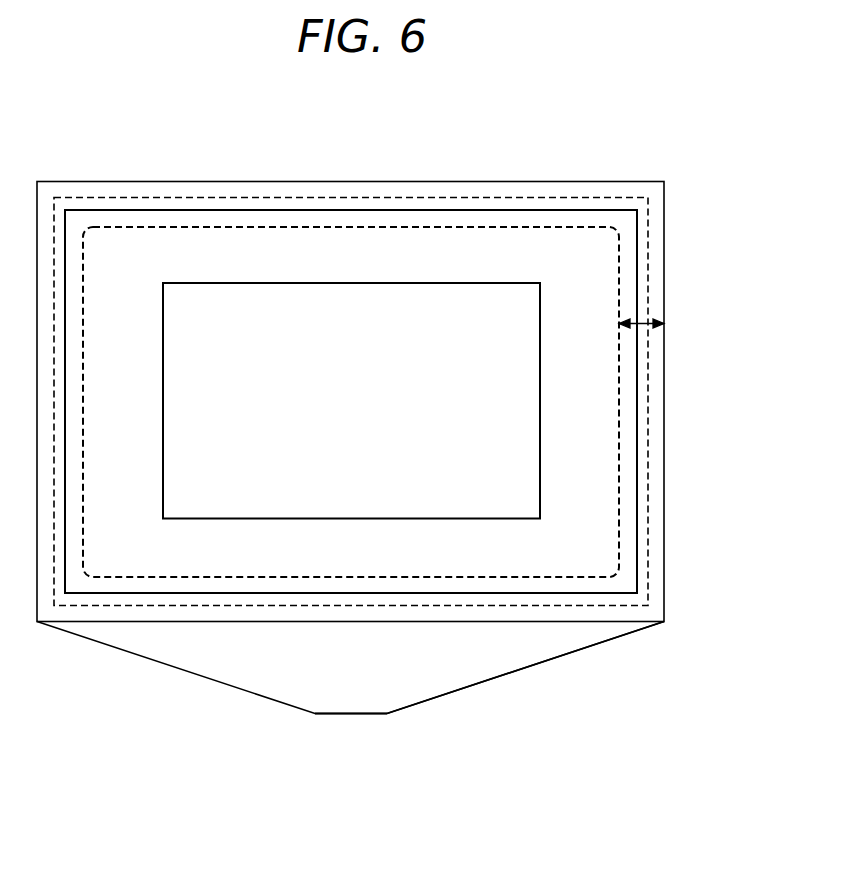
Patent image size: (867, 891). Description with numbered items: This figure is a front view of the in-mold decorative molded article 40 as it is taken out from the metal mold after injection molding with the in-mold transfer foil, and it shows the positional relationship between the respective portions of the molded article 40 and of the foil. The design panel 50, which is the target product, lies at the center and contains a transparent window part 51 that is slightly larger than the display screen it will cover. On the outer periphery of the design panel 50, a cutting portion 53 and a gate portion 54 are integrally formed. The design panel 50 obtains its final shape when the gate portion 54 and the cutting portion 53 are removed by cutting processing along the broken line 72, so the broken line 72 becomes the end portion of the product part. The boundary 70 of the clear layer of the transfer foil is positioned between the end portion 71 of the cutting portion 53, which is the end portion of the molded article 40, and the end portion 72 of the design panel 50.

The molded article 40 is at (623, 164).
The design panel 50 is at (450, 253).
The window part 51 is at (352, 310).
The cutting portion 53 is at (642, 322).
The gate portion 54 is at (350, 695).
The boundary of the clear layer 70 is at (648, 423).
The end portion of the cutting portion 71 is at (665, 631).
The broken line 72 is at (620, 368).